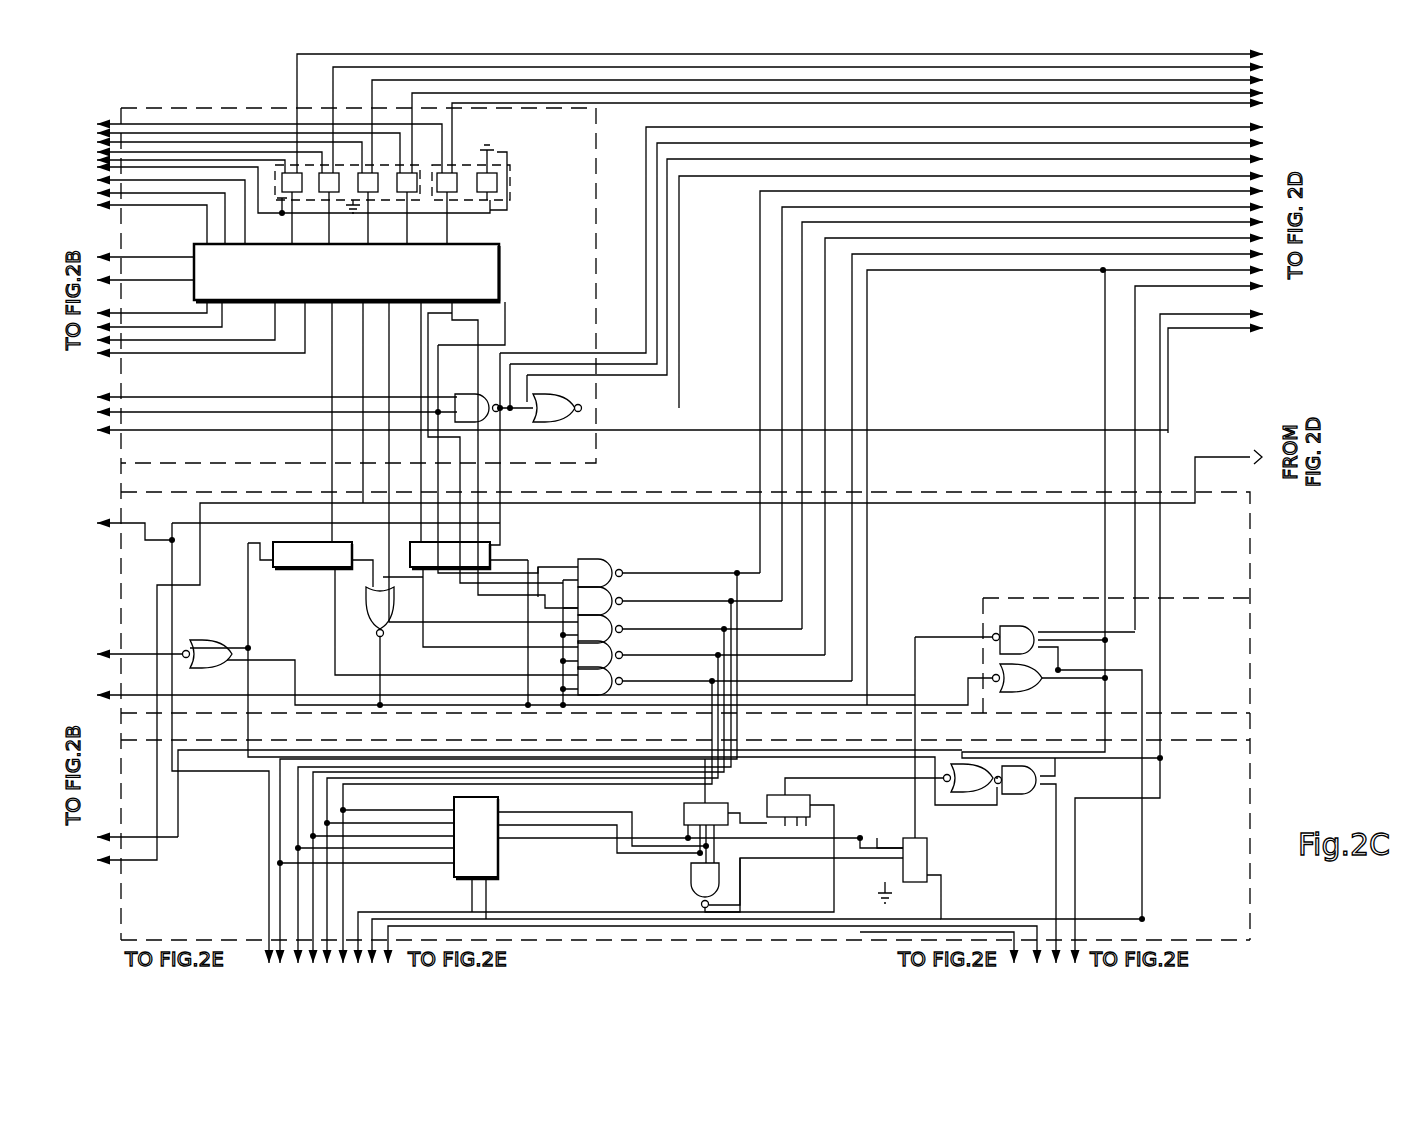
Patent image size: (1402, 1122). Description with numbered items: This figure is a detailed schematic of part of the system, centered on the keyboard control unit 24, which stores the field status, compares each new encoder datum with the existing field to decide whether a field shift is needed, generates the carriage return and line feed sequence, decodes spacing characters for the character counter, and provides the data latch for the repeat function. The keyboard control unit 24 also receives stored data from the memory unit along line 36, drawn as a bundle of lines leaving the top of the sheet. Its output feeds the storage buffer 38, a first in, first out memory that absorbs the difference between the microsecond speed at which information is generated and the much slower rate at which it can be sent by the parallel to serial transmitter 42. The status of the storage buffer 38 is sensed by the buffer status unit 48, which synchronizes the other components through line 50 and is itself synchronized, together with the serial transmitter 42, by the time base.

The line 36 is at (1170, 52).
The keyboard control unit 24 is at (575, 152).
The storage buffer 38 is at (1005, 568).
The buffer status unit 48 is at (1217, 698).
The parallel to serial transmitter 42 is at (1212, 789).
The line 50 is at (245, 912).